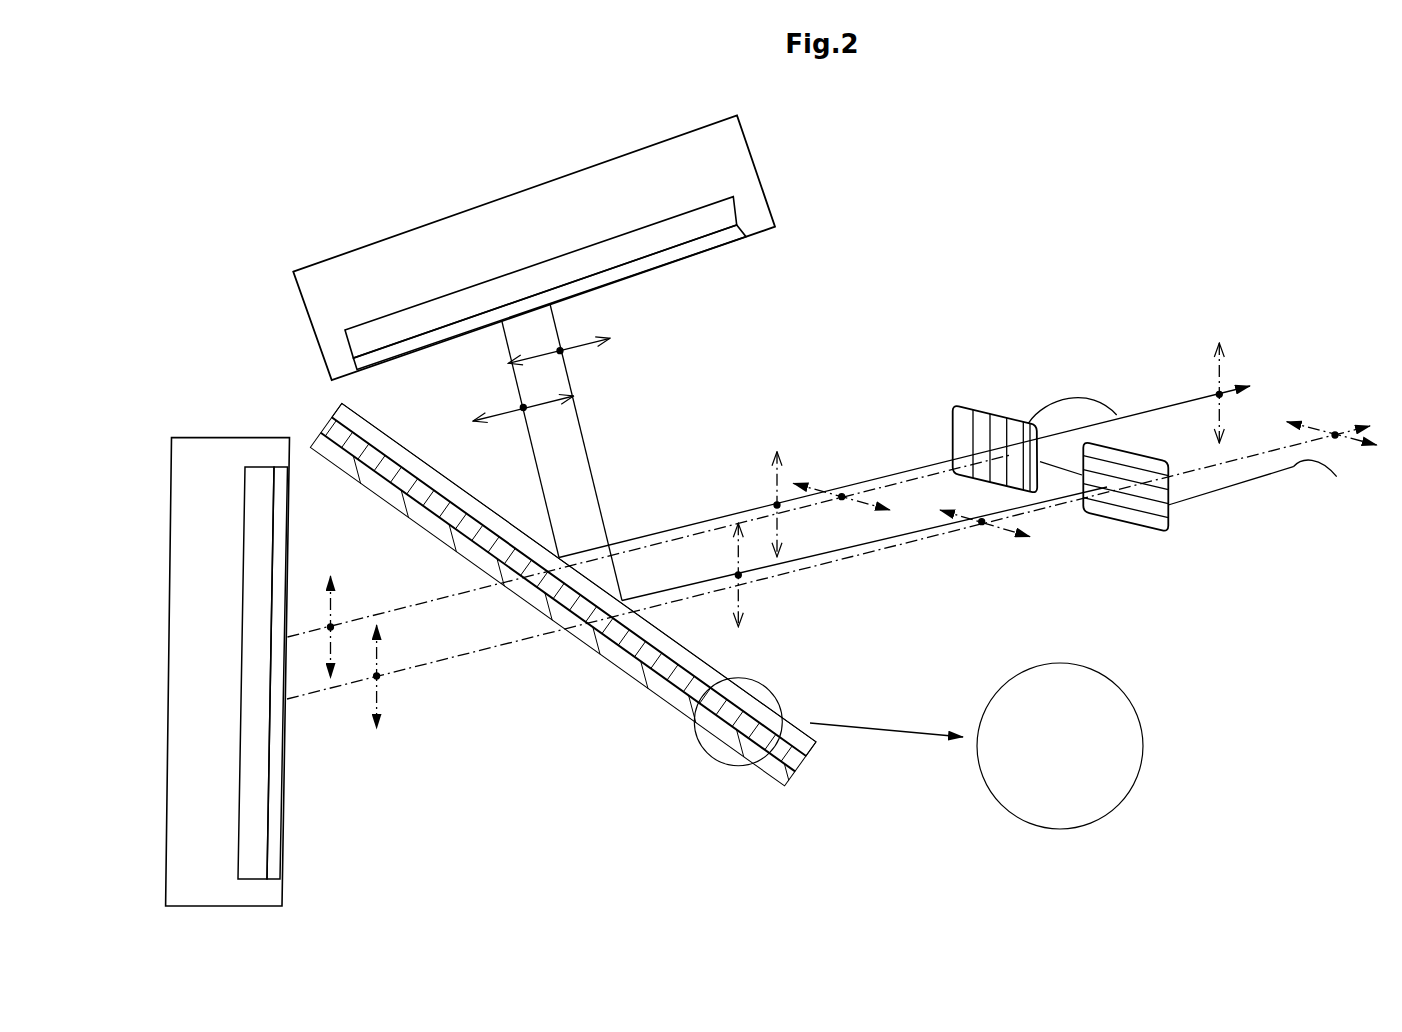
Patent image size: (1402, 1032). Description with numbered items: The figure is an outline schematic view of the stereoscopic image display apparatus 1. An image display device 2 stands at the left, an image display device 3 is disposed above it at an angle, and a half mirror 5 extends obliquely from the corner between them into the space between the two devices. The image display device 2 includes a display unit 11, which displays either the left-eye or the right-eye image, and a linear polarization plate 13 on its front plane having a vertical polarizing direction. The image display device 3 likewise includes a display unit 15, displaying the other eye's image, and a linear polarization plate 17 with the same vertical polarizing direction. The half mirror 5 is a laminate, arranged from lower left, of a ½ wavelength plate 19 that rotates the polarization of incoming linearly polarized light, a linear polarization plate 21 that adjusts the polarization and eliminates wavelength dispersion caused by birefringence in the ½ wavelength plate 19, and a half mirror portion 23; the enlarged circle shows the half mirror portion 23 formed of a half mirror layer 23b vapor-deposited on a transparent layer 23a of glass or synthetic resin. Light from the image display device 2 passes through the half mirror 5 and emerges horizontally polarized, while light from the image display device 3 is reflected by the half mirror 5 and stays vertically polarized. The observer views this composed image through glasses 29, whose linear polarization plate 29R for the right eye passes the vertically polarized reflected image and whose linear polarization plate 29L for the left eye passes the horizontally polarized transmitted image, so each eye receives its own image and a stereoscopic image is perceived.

The stereoscopic image display apparatus 1 is at (235, 249).
The image display device 2 is at (266, 645).
The image display device 3 is at (534, 248).
The half mirror 5 is at (792, 659).
The display unit 11 is at (257, 766).
The linear polarization plate 13 is at (279, 807).
The display unit 15 is at (707, 223).
The linear polarization plate 17 is at (663, 265).
The ½ wavelength plate 19 is at (913, 843).
The linear polarization plate 21 is at (800, 762).
The half mirror portion 23 is at (803, 639).
The transparent layer 23a is at (1050, 716).
The half mirror layer 23b is at (1140, 746).
The glasses with polarization plates 29 is at (1145, 446).
The linear polarization plate for the right eye 29R is at (975, 417).
The linear polarization plate for the left eye 29L is at (1127, 523).